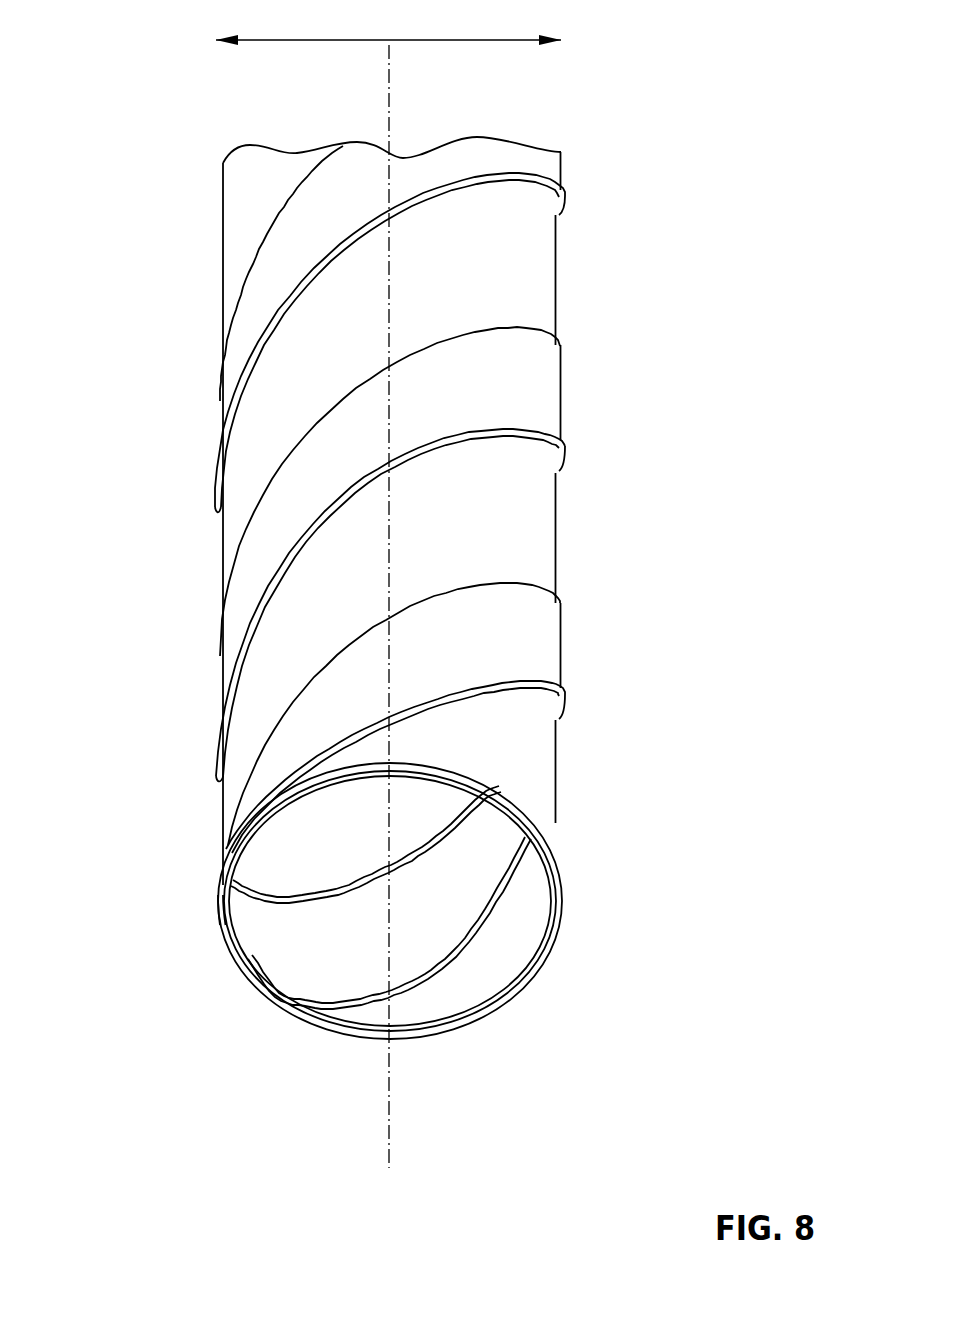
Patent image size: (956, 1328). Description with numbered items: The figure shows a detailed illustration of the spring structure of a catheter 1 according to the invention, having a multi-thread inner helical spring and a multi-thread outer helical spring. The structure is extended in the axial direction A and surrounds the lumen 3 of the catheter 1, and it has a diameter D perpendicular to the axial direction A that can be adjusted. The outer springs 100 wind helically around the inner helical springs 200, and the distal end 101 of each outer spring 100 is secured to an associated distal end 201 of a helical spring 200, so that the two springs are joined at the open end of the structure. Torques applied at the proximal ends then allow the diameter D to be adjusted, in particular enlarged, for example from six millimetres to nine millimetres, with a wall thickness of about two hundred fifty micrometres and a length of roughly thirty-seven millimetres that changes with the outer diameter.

The catheter 1 is at (722, 290).
The outer spring 100 is at (531, 535).
The helical spring 200 is at (272, 858).
The distal end 101 is at (199, 942).
The distal end 201 is at (163, 933).
The lumen 3 is at (362, 1052).
The axial direction A is at (392, 1127).
The diameter D is at (388, 26).